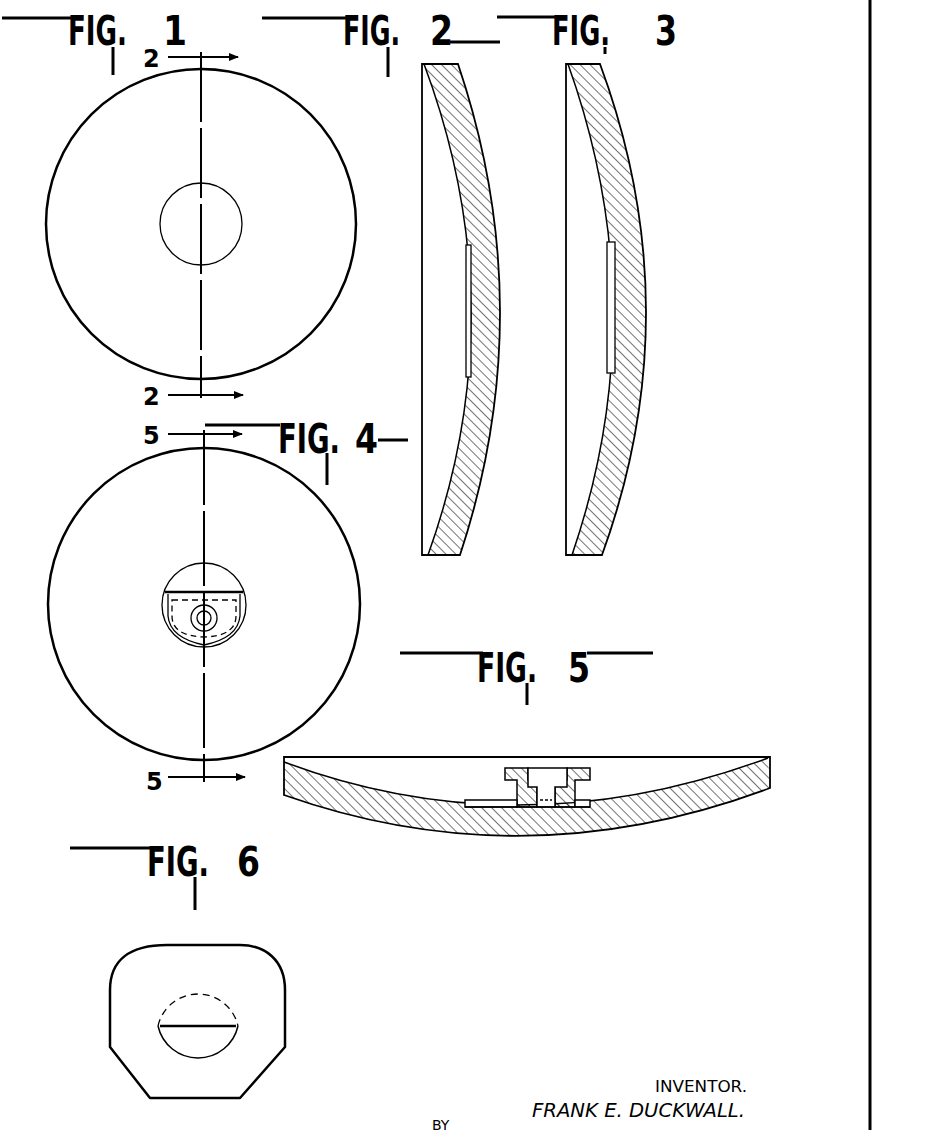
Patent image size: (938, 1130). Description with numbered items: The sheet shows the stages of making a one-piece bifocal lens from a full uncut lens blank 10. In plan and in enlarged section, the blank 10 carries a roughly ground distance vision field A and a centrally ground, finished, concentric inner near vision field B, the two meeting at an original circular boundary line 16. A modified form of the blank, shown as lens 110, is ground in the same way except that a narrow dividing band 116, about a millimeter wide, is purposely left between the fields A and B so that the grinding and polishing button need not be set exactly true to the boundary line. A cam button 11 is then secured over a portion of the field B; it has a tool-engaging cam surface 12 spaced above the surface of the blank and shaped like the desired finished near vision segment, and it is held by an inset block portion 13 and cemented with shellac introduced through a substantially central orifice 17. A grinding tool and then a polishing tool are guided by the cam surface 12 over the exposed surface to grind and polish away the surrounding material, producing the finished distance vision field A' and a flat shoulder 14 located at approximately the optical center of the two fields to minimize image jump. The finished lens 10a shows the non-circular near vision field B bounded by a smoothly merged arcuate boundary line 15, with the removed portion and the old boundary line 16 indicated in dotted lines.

In FIG. 1, the lens blank 10 is at (311, 113).
In FIG. 2, the lens blank 10 is at (470, 105).
In FIG. 4, the lens blank 10 is at (338, 515).
In FIG. 5, the lens blank 10 is at (642, 830).
In FIG. 3, the lens (modified form) 110 is at (630, 167).
In FIG. 3, the narrow dividing band 116 is at (610, 373).
In FIG. 4, the cam button 11 is at (232, 627).
In FIG. 5, the cam button 11 is at (518, 767).
In FIG. 4, the tool-engaging cam surface 12 is at (168, 624).
In FIG. 5, the tool-engaging cam surface 12 is at (585, 780).
In FIG. 4, the inset block portion 13 is at (176, 636).
In FIG. 5, the inset block portion 13 is at (590, 800).
In FIG. 5, the shoulder 14 is at (505, 808).
In FIG. 6, the shoulder 14 is at (212, 1025).
In FIG. 6, the merged arcuate boundary line 15 is at (227, 1067).
In FIG. 4, the original boundary line 16 is at (186, 569).
In FIG. 5, the original boundary line 16 is at (467, 800).
In FIG. 6, the original boundary line 16 is at (175, 1002).
In FIG. 4, the orifice 17 is at (202, 628).
In FIG. 5, the orifice 17 is at (544, 790).
In FIG. 6, the lens (modified form) 10a is at (257, 950).
In FIG. 1, the distance vision field A is at (296, 183).
In FIG. 2, the distance vision field A is at (415, 168).
In FIG. 3, the distance vision field A is at (565, 175).
In FIG. 4, the distance vision field A is at (311, 576).
In FIG. 5, the distance vision field A is at (671, 743).
In FIG. 5, the finished distance vision field A' is at (706, 742).
In FIG. 6, the finished distance vision field A' is at (288, 981).
In FIG. 1, the inner near vision field B is at (201, 224).
In FIG. 2, the inner near vision field B is at (466, 285).
In FIG. 3, the inner near vision field B is at (610, 285).
In FIG. 4, the inner near vision field B is at (226, 581).
In FIG. 5, the inner near vision field B is at (510, 803).
In FIG. 6, the inner near vision field B is at (206, 1059).